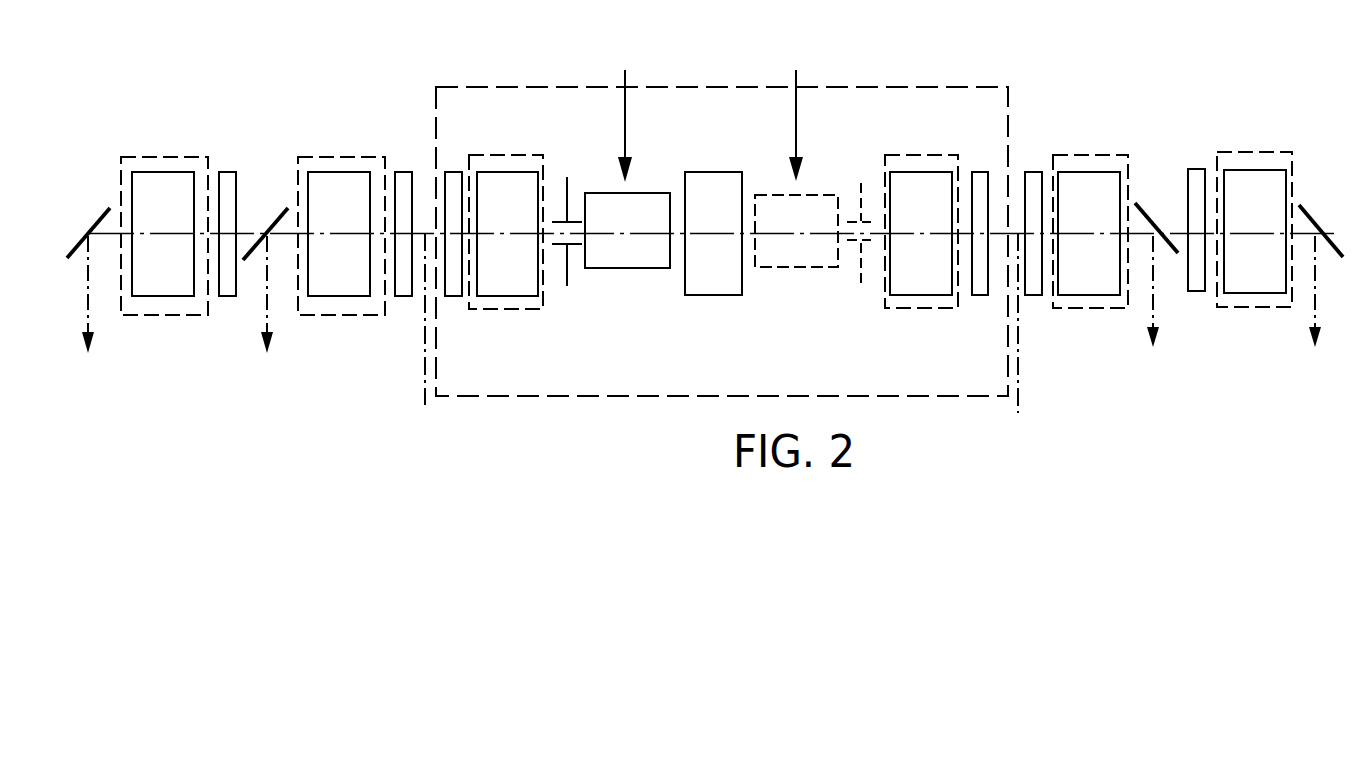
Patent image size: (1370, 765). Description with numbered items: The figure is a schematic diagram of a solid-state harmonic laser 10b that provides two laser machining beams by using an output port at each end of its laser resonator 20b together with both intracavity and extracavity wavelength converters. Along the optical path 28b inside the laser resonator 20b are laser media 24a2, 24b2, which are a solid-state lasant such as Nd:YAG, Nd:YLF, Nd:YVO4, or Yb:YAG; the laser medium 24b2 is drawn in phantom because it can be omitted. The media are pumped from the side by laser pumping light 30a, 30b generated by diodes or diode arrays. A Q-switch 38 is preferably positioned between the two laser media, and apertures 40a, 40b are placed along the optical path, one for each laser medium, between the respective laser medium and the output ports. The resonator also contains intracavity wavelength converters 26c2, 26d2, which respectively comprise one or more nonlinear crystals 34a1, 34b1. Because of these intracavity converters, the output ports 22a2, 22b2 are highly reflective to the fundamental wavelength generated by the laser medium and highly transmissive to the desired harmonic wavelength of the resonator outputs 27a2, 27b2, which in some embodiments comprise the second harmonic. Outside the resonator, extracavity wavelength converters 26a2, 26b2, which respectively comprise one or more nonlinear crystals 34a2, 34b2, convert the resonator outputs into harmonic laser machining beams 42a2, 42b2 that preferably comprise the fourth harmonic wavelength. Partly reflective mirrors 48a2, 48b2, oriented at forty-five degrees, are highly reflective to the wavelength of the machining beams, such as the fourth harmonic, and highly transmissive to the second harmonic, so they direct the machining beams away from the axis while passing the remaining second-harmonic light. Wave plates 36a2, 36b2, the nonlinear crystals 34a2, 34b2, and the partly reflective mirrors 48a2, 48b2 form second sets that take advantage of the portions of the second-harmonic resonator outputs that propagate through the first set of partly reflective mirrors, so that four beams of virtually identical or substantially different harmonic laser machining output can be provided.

The solid-state laser 10b is at (1141, 436).
The laser resonator 20b is at (827, 87).
The output port 22a2 is at (453, 172).
The output port 22b2 is at (978, 172).
The laser medium 24a2 is at (622, 270).
The laser medium 24b2 is at (787, 268).
The extracavity wavelength converter 26a2 is at (150, 157).
The extracavity wavelength converter 26b2 is at (1077, 155).
The intracavity wavelength converter 26c2 is at (517, 155).
The intracavity wavelength converter 26d2 is at (938, 155).
The resonator output 27a2 is at (434, 340).
The resonator output 27b2 is at (1016, 344).
The optical path 28b is at (678, 233).
The laser pumping light 30a is at (625, 132).
The laser pumping light 30b is at (796, 123).
The nonlinear crystal 34a1 is at (502, 296).
The nonlinear crystal 34a2 is at (158, 297).
The nonlinear crystal 34b1 is at (903, 296).
The nonlinear crystal 34b2 is at (1083, 296).
The wave plate 36a2 is at (225, 172).
The wave plate 36b2 is at (1030, 172).
The Q-switch 38 is at (713, 297).
The aperture 40a is at (567, 262).
The aperture 40b is at (857, 262).
The harmonic laser machining beam 42a2 is at (87, 290).
The harmonic laser machining beam 42b2 is at (1160, 310).
The partly reflective mirror 48a2 is at (102, 208).
The partly reflective mirror 48b2 is at (1170, 217).